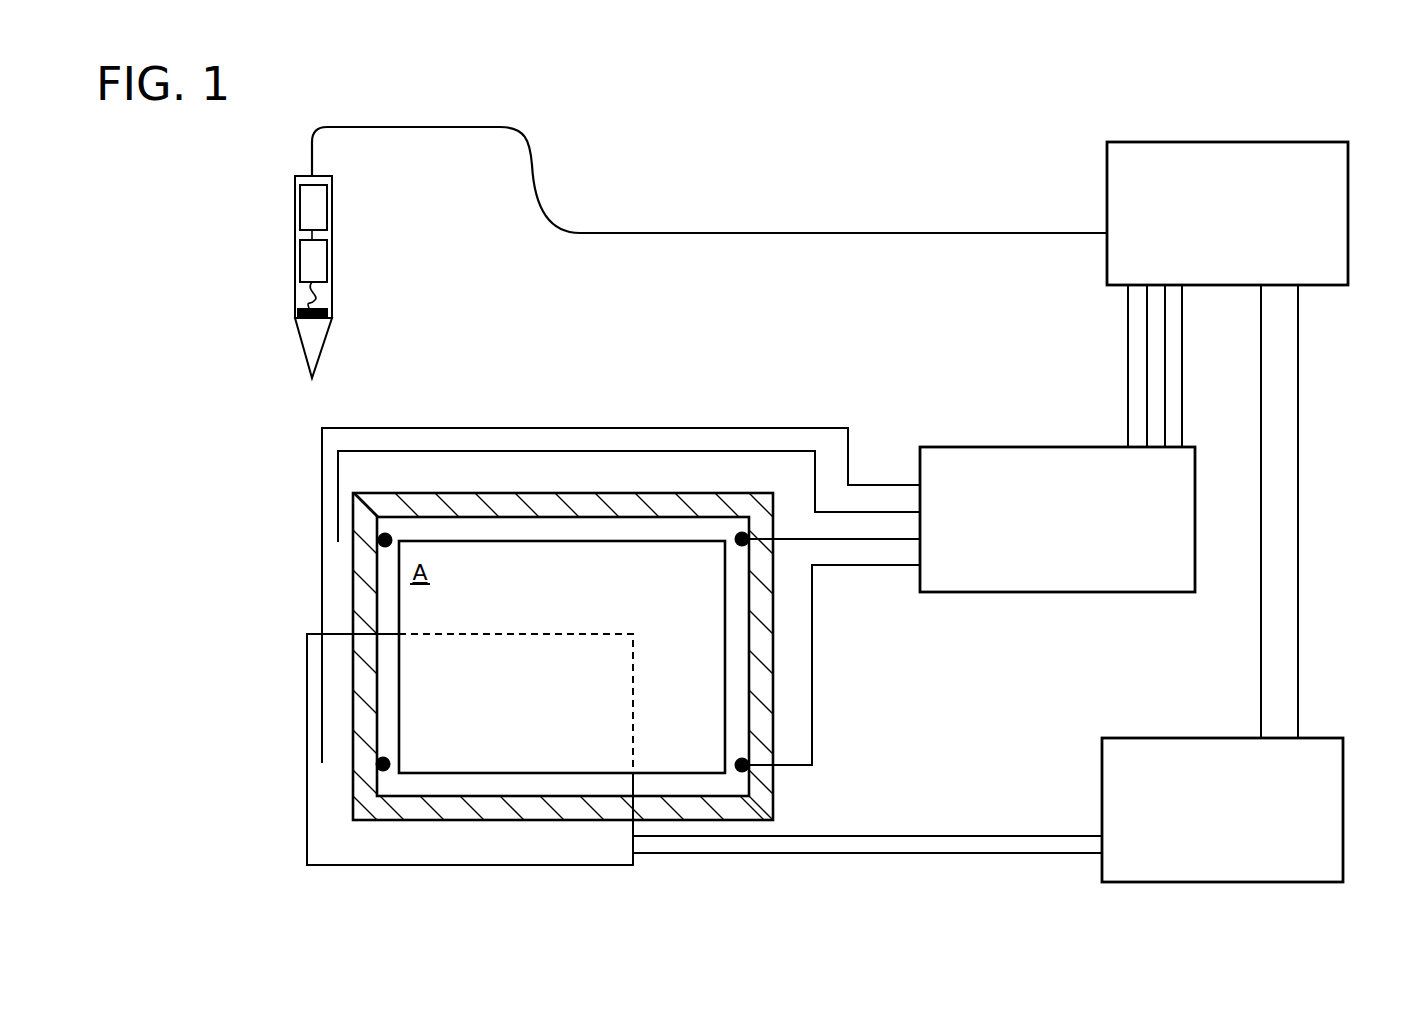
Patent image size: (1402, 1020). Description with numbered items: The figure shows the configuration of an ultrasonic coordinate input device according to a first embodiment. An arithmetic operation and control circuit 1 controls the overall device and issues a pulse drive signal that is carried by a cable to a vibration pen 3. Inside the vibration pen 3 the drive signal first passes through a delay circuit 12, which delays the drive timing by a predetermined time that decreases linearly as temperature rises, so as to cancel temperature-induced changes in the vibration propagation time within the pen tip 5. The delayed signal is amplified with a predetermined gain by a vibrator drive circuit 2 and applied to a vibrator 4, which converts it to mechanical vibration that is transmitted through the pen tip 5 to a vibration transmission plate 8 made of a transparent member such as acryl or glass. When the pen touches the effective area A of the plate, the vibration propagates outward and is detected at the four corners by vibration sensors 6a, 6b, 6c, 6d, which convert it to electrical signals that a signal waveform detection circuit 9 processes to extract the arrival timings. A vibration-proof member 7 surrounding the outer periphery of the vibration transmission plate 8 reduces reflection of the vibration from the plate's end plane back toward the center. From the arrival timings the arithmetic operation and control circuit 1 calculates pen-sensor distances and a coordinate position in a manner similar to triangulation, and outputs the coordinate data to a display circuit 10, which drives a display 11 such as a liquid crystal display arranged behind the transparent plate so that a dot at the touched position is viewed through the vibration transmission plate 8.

The arithmetic operation and control circuit 1 is at (1257, 142).
The vibrator drive circuit 2 is at (327, 257).
The vibration pen 3 is at (295, 255).
The vibrator 4 is at (330, 314).
The pen tip 5 is at (313, 345).
The vibration sensor 6a is at (386, 533).
The vibration sensor 6b is at (392, 758).
The vibration sensor 6c is at (735, 759).
The vibration sensor 6d is at (735, 545).
The vibration-proof member 7 is at (608, 492).
The vibration transmission plate 8 is at (667, 765).
The signal waveform detection circuit 9 is at (990, 447).
The display circuit 10 is at (1328, 738).
The display 11 is at (375, 866).
The delay circuit 12 is at (327, 196).